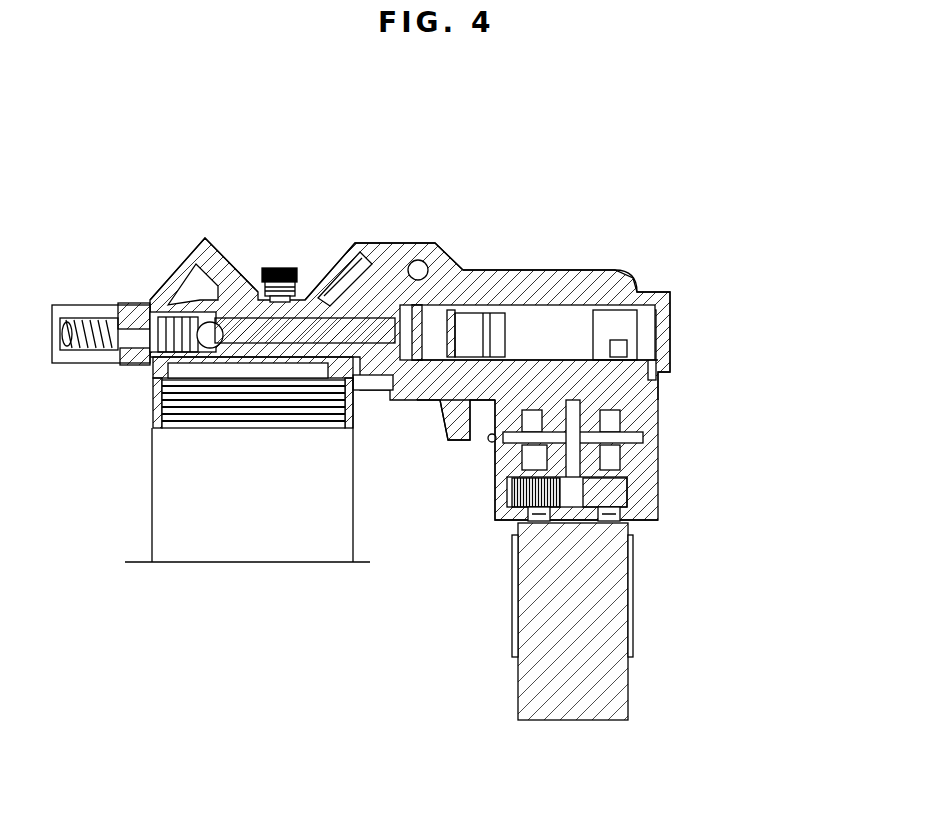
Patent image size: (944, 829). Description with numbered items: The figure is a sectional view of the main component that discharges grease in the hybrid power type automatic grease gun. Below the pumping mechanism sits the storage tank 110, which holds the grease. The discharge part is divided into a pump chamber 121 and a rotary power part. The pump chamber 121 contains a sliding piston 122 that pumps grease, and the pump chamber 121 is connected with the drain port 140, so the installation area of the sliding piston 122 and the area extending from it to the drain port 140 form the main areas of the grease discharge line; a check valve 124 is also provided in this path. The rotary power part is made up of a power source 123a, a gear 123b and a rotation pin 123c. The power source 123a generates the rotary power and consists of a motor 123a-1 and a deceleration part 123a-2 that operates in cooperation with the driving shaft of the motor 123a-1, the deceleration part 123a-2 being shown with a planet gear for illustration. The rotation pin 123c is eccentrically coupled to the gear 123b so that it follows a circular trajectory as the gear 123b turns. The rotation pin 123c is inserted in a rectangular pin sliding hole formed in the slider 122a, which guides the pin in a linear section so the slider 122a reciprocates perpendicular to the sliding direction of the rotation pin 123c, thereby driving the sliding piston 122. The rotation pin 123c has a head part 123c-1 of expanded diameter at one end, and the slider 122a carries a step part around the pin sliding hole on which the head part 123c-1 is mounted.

The storage tank 110 is at (152, 480).
The pump chamber 121 is at (288, 300).
The sliding piston 122 is at (250, 330).
The slider 122a is at (360, 262).
The power source 123a is at (680, 598).
The motor 123a-1 is at (608, 653).
The deceleration part 123a-2 is at (650, 478).
The gear 123b is at (513, 370).
The rotation pin 123c is at (470, 272).
The head part 123c-1 is at (414, 282).
The check valve 124 is at (200, 318).
The drain port 140 is at (184, 268).